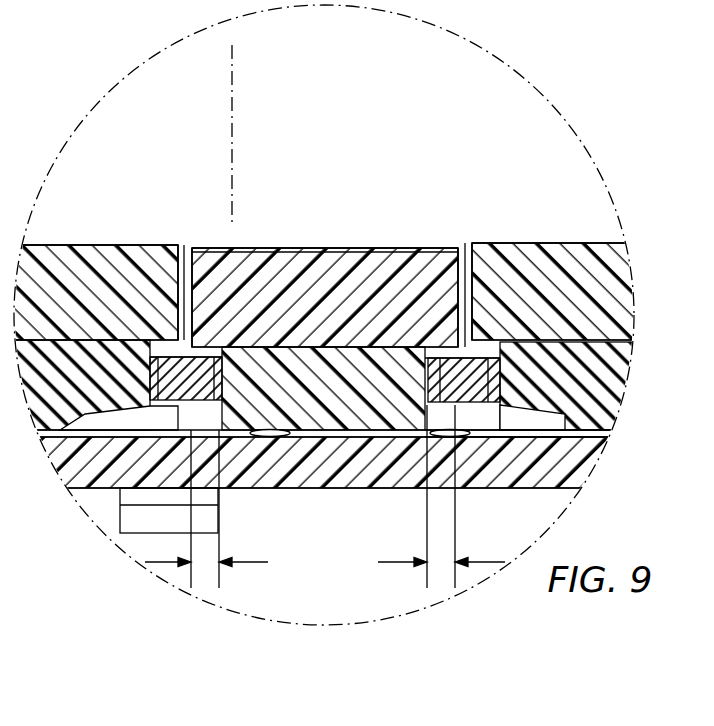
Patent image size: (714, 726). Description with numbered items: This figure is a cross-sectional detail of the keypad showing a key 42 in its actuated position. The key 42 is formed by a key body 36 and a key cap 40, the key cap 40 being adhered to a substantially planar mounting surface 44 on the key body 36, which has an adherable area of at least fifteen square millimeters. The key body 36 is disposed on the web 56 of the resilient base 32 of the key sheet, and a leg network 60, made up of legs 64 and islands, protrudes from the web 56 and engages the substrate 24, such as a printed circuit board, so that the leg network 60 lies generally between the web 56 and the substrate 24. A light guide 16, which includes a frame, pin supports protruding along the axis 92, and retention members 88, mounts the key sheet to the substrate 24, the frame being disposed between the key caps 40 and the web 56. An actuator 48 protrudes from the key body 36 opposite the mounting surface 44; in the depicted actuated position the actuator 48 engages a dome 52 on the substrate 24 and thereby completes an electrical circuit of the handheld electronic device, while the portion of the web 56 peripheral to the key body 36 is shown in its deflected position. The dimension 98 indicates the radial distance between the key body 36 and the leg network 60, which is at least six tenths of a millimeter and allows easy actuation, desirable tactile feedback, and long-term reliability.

The light guide 16 is at (545, 375).
The substrate 24 is at (287, 489).
The resilient base 32 is at (494, 465).
The key body 36 is at (110, 340).
The key cap 40 is at (144, 247).
The key 42 is at (74, 232).
The mounting surface 44 is at (70, 338).
The actuator 48 is at (368, 489).
The dome 52 is at (365, 422).
The web 56 is at (220, 432).
The leg network 60 is at (132, 437).
The leg 64 is at (175, 412).
The retention member 88 is at (136, 543).
The axis 92 is at (233, 137).
The dimension 98 is at (205, 567).